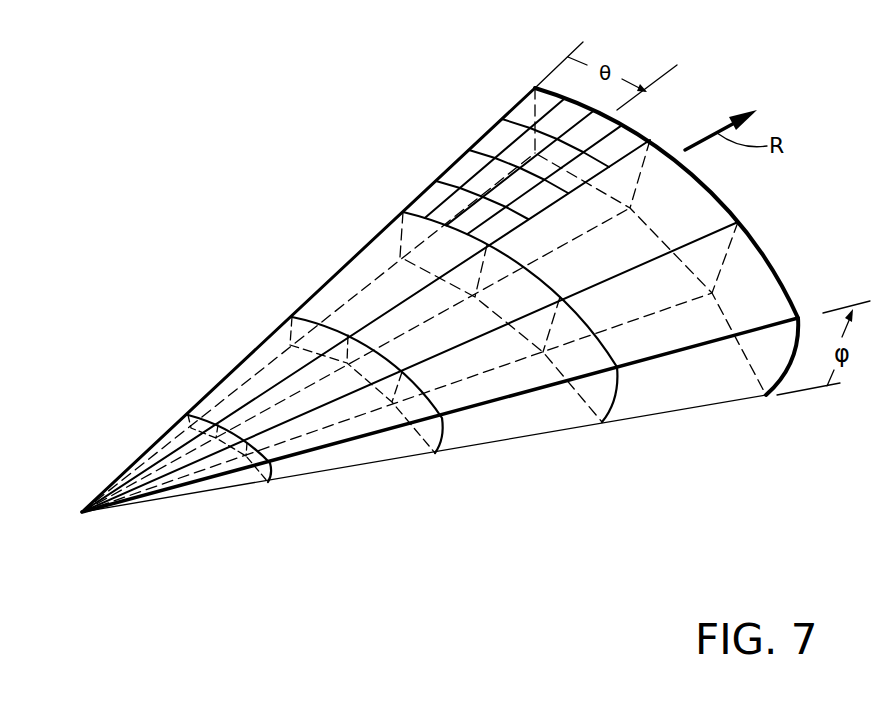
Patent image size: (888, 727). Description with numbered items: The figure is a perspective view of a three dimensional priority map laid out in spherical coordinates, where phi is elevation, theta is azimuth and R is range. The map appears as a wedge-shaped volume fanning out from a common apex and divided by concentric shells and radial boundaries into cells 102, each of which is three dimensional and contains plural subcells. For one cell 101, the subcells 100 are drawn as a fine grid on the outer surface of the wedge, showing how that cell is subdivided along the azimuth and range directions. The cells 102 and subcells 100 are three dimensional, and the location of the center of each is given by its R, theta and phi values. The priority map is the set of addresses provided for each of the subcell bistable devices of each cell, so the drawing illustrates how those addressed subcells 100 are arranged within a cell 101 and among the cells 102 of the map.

The subcells 100 is at (482, 131).
The cell 101 is at (460, 169).
The cells 102 is at (386, 262).